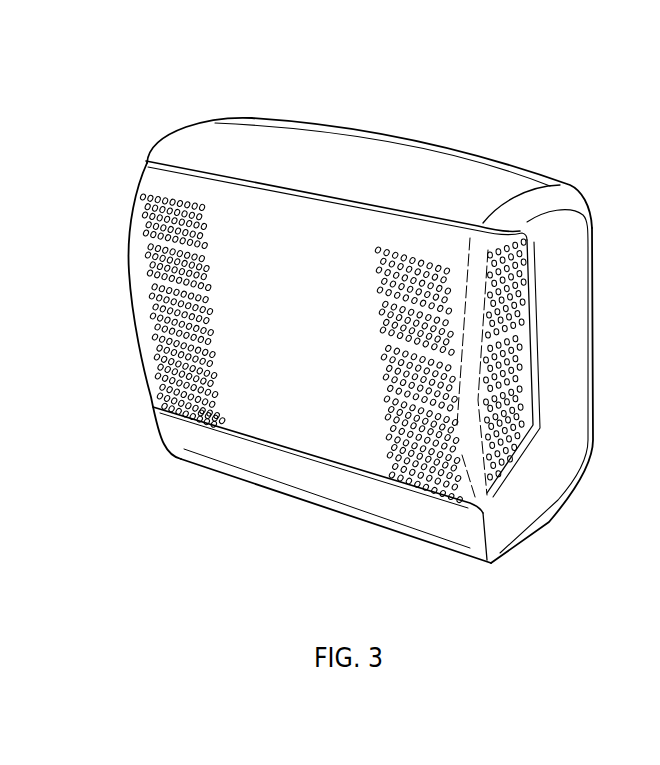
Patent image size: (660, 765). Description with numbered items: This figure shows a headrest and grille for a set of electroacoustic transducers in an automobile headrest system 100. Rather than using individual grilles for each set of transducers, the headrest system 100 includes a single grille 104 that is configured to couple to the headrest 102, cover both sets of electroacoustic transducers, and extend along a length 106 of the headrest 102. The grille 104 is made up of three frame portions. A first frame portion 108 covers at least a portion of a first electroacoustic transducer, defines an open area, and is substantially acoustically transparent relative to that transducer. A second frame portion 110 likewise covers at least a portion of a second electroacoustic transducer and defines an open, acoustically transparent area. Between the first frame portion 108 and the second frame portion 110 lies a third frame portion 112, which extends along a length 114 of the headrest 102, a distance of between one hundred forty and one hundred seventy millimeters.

The headrest system 100 is at (388, 130).
The headrest 102 is at (570, 185).
The grille 104 is at (243, 196).
The length of the headrest 106 is at (450, 597).
The first frame portion 108 is at (455, 443).
The second frame portion 110 is at (121, 191).
The third frame portion 112 is at (292, 413).
The length of the headrest 114 is at (345, 531).